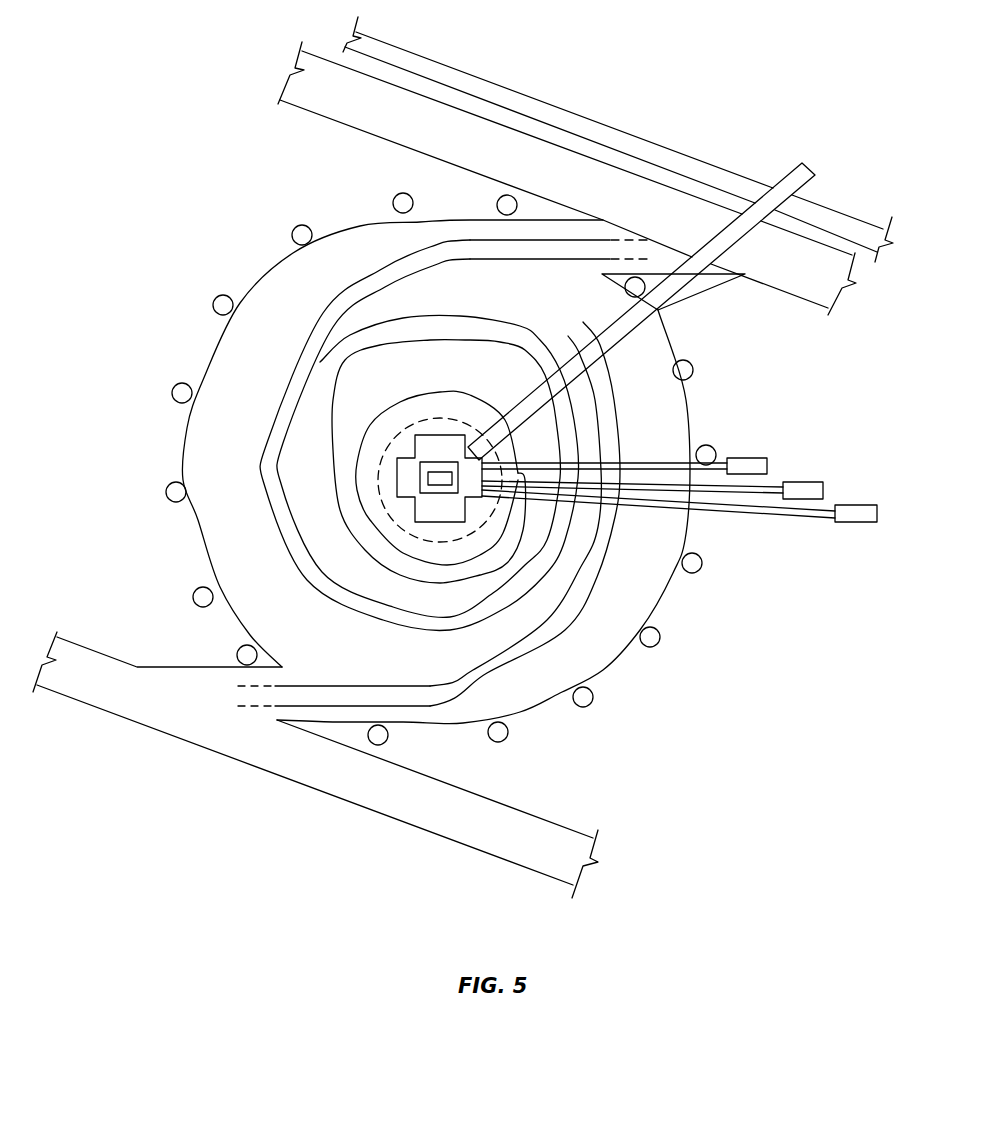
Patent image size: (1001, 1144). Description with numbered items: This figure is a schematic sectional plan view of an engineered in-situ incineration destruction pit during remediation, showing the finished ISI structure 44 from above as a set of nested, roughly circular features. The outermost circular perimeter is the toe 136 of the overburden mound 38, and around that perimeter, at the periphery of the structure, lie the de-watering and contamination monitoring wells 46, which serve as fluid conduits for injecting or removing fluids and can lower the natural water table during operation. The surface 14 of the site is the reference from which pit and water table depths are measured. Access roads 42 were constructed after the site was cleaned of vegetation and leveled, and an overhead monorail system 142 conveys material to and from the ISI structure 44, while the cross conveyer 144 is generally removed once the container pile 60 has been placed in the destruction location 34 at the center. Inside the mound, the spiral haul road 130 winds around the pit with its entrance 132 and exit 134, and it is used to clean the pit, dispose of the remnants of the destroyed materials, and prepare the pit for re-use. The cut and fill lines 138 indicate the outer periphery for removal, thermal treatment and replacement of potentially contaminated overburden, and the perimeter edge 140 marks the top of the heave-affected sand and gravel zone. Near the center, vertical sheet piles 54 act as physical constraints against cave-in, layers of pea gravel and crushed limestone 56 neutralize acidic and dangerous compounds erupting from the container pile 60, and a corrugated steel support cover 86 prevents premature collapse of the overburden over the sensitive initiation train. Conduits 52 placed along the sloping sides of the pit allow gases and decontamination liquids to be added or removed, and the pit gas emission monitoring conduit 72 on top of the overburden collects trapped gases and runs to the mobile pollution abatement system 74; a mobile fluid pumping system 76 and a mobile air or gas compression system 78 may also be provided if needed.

The surface 14 is at (683, 739).
The destruction location 34 is at (432, 475).
The overburden mound 38 is at (296, 628).
The access roads 42 is at (444, 470).
The ISI structure 44 is at (146, 76).
The wells 46 is at (396, 196).
The conduits 52 is at (766, 487).
The sheet piles 54 is at (452, 416).
The crushed limestone 56 is at (433, 507).
The container pile 60 is at (390, 470).
The pit gas emission monitoring conduit 72 is at (722, 462).
The mobile pollution abatement system 74 is at (755, 458).
The mobile fluid pumping system 76 is at (824, 482).
The mobile air or gas compression system 78 is at (858, 523).
The corrugated steel support cover 86 is at (413, 497).
The spiral haul road 130 is at (272, 506).
The entrance 132 is at (212, 667).
The exit 134 is at (500, 240).
The toe 136 is at (276, 273).
The cut and fill lines 138 is at (439, 463).
The perimeter edge 140 is at (414, 317).
The overhead monorail system 142 is at (600, 122).
The cross conveyer 144 is at (671, 299).